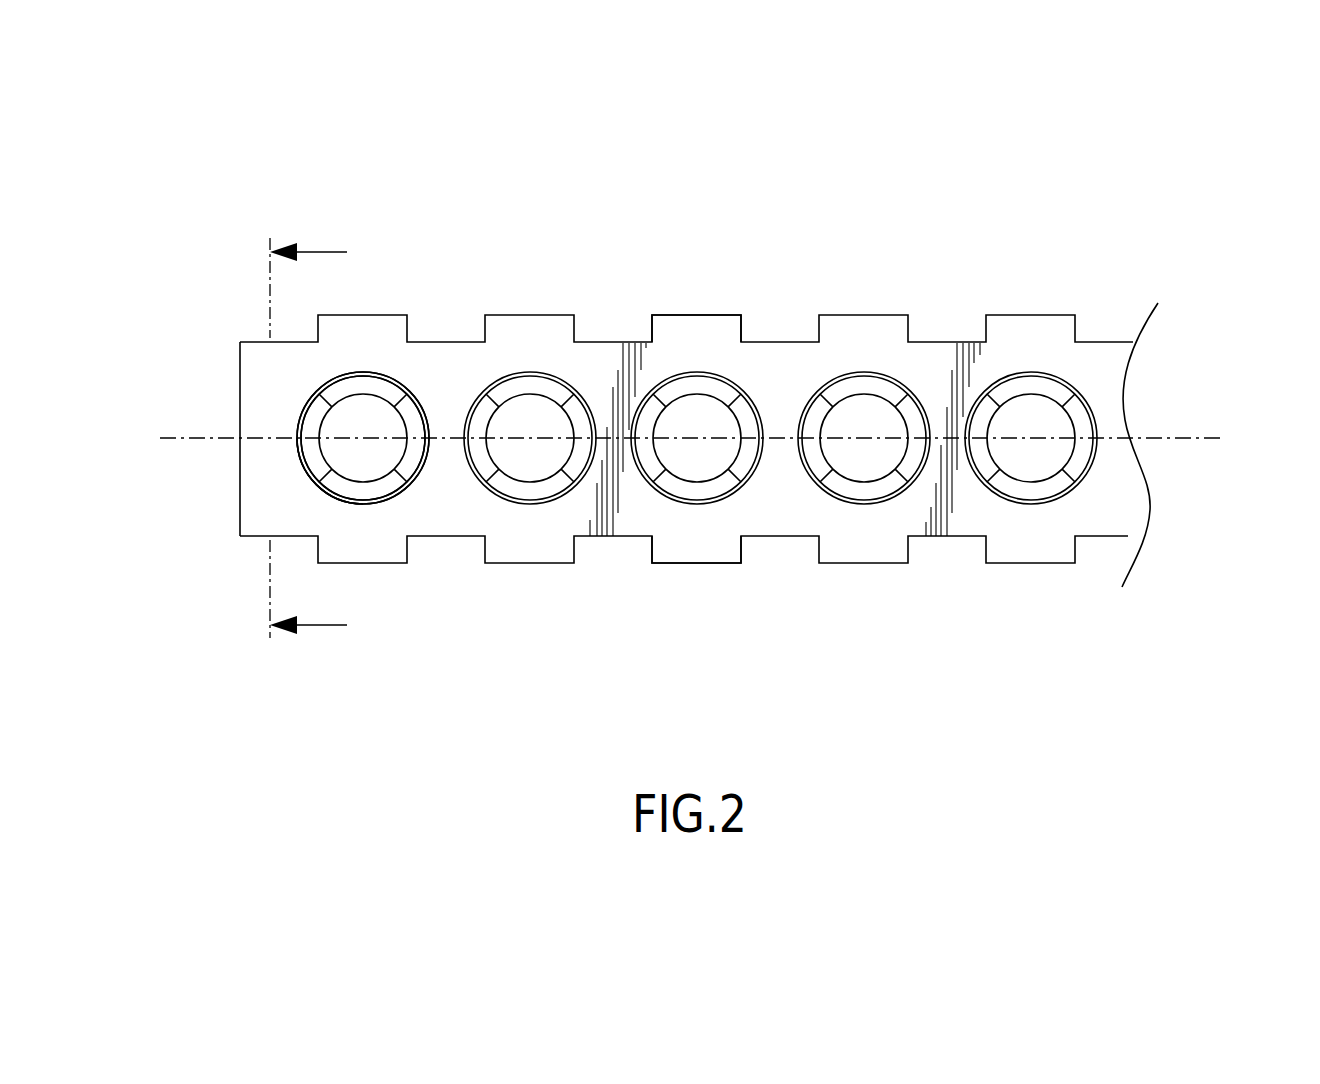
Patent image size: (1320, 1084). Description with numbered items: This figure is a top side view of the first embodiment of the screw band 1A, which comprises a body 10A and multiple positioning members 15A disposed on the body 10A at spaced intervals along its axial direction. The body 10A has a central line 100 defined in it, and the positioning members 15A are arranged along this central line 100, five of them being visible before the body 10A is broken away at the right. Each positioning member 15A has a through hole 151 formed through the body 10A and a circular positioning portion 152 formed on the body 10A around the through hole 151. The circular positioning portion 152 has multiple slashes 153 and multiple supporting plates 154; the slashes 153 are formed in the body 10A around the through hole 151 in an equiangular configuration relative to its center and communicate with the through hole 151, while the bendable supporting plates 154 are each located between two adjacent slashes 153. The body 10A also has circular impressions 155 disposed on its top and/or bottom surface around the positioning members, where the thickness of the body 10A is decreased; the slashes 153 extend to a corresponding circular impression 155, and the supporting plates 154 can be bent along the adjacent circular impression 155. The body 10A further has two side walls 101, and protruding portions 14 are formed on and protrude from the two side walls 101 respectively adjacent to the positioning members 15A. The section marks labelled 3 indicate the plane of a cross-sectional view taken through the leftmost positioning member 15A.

The screw band 1A is at (711, 230).
The body 10A is at (226, 347).
The central line 100 is at (1209, 438).
The side walls 101 is at (608, 340).
The protruding portions 14 is at (714, 328).
The positioning members 15A is at (364, 350).
The through hole 151 is at (372, 418).
The circular positioning portion 152 is at (400, 500).
The slashes 153 is at (310, 472).
The supporting plates 154 is at (310, 428).
The circular impressions 155 is at (332, 502).
The section line 3- 3 is at (308, 427).